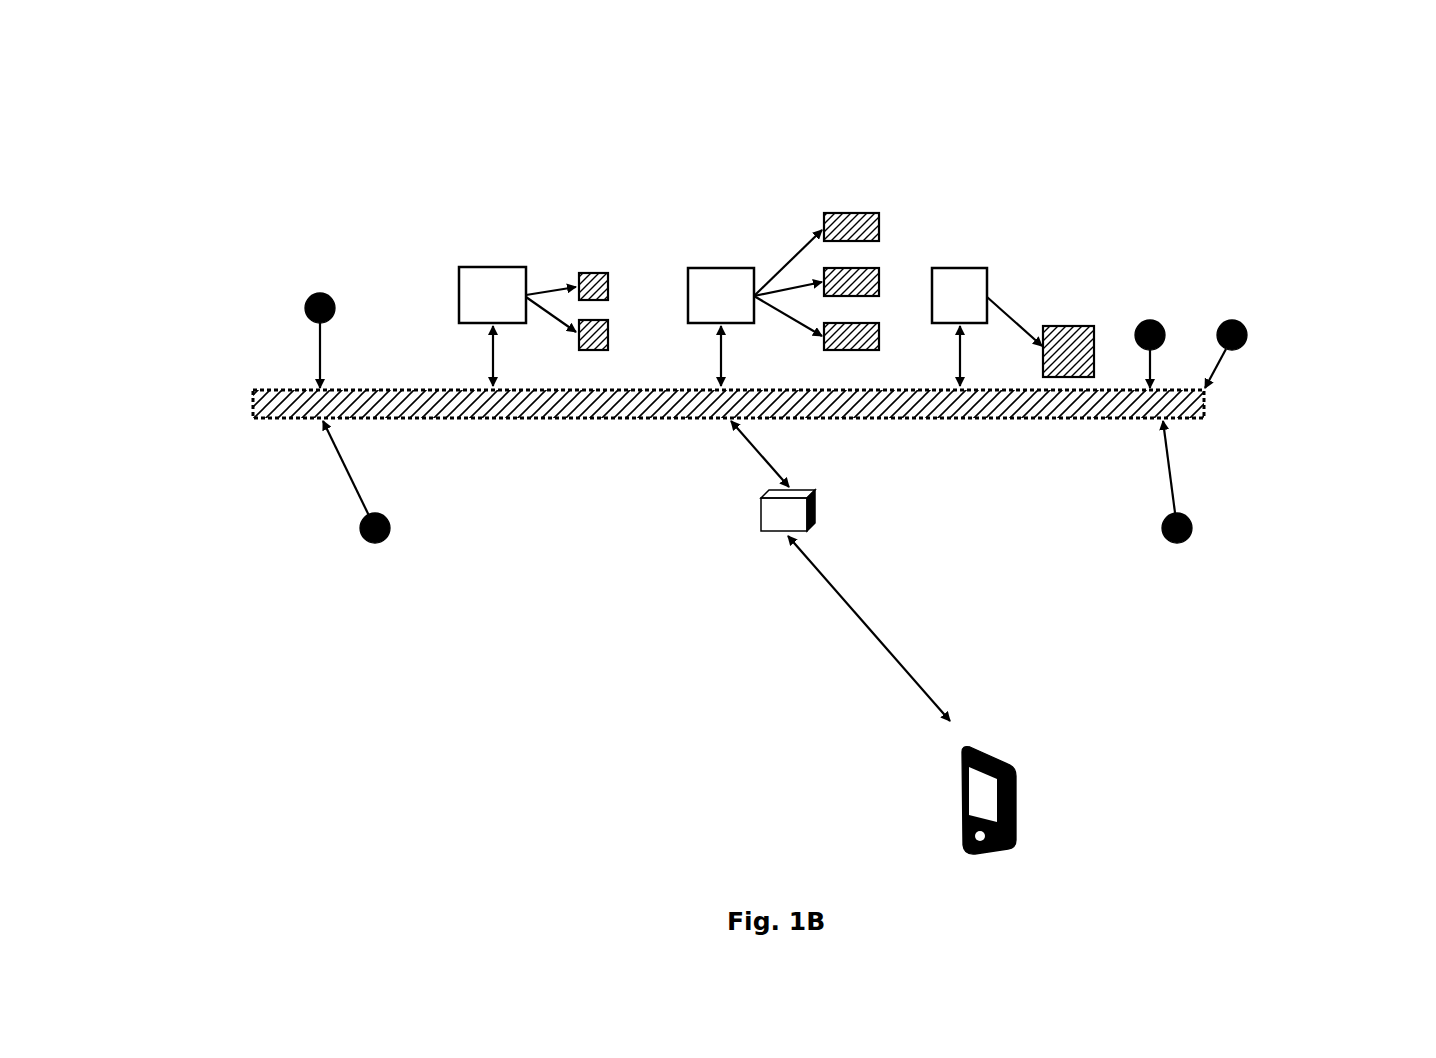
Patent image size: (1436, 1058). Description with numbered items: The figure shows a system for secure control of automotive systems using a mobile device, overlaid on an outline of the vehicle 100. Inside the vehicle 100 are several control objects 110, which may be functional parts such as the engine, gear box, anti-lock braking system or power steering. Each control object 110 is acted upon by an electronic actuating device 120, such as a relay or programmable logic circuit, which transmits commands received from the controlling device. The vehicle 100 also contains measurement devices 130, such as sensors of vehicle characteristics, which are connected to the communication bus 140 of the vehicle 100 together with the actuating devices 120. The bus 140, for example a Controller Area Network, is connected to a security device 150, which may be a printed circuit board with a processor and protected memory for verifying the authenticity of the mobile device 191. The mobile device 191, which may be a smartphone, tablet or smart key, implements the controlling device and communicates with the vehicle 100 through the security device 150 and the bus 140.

The vehicle 100 is at (225, 154).
The control object 110 is at (1065, 326).
The electronic actuating device 120 is at (722, 268).
The measurement device 130 is at (1185, 518).
The communication bus 140 is at (707, 390).
The security device 150 is at (801, 476).
The mobile device 191 is at (923, 695).